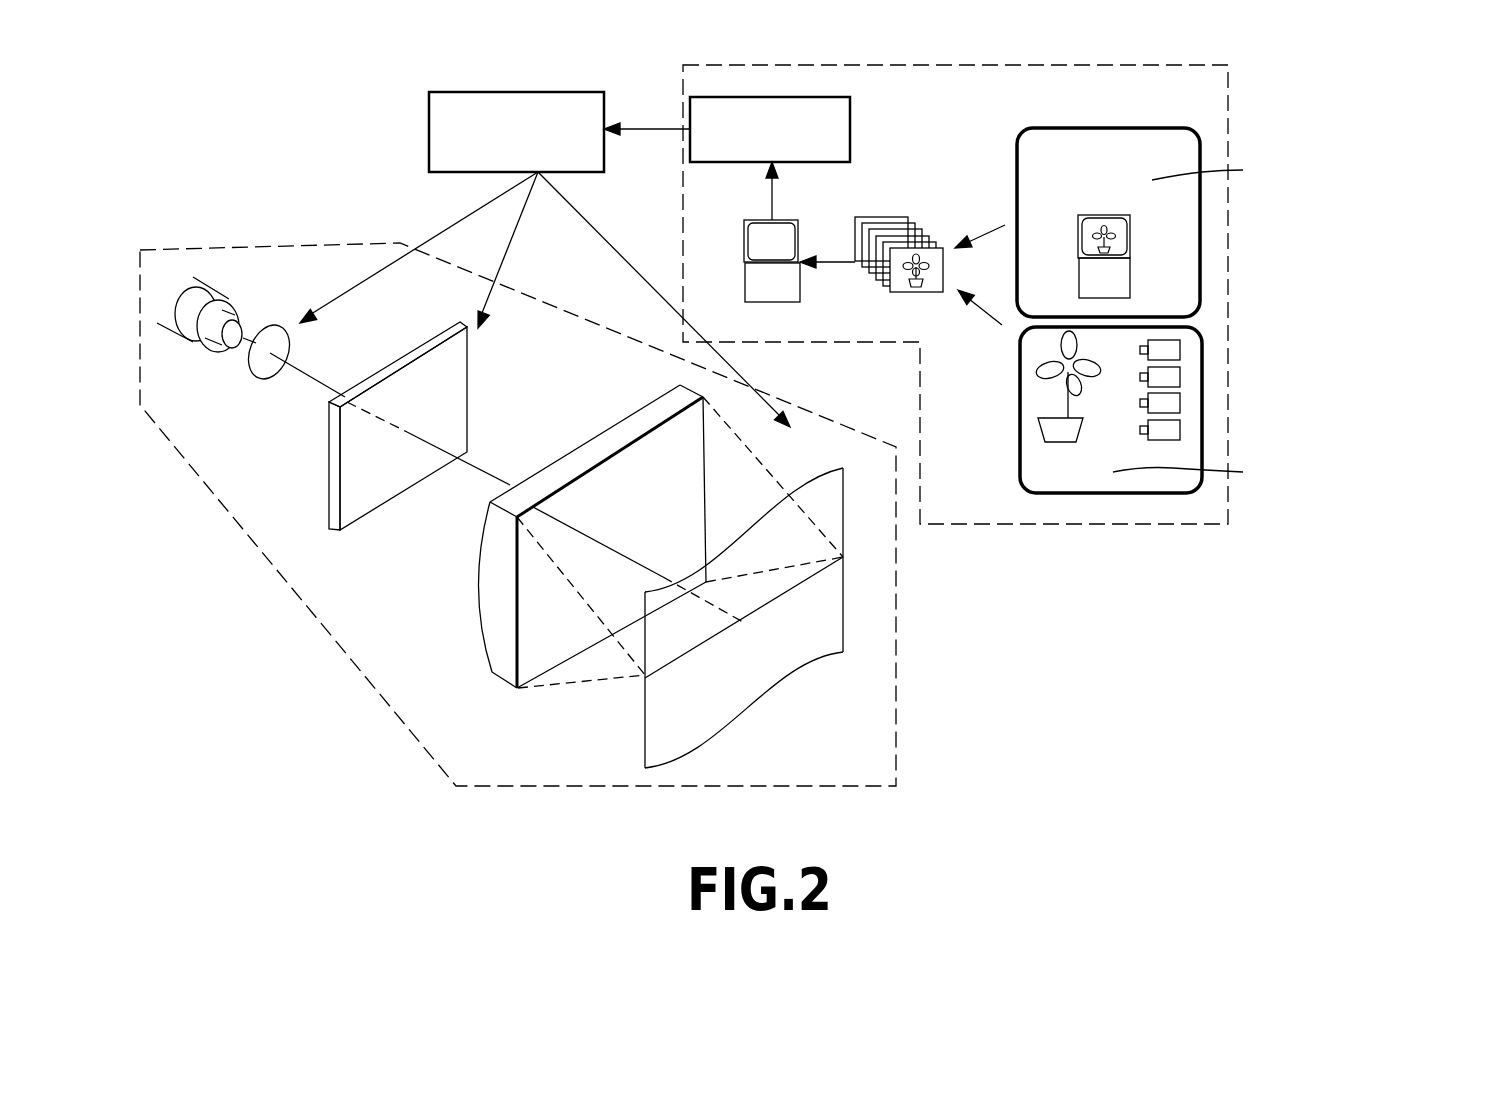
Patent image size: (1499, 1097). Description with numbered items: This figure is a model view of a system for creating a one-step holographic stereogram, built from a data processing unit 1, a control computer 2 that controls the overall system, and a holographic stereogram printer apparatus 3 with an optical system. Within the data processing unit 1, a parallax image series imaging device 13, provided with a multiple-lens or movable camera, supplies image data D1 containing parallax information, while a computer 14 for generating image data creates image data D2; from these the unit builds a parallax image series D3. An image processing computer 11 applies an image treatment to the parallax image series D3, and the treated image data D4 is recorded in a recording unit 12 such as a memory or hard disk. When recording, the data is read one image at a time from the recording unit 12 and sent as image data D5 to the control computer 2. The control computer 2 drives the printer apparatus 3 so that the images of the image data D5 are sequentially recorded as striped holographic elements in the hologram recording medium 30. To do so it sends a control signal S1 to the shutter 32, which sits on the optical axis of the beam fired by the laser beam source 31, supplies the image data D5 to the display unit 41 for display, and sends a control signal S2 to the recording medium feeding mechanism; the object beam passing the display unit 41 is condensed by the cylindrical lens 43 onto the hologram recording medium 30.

The data processing unit 1 is at (1093, 524).
The control computer 2 is at (429, 125).
The holographic stereogram printer apparatus 3 is at (898, 673).
The image processing computer 11 is at (743, 267).
The recording unit 12 is at (850, 127).
The parallax image series imaging device 13 is at (1020, 423).
The computer for generating image data 14 is at (1095, 128).
The hologram recording medium 30 is at (773, 685).
The laser beam source 31 is at (200, 348).
The shutter 32 is at (260, 377).
The display unit 41 is at (403, 487).
The cylindrical lens 43 is at (493, 665).
The control signal S1 is at (397, 262).
The control signal S2 is at (628, 258).
The image data D1 is at (977, 310).
The image data D2 is at (978, 237).
The parallax image series D3 is at (880, 268).
The treated image data D4 is at (772, 193).
The image data D5 is at (643, 127).